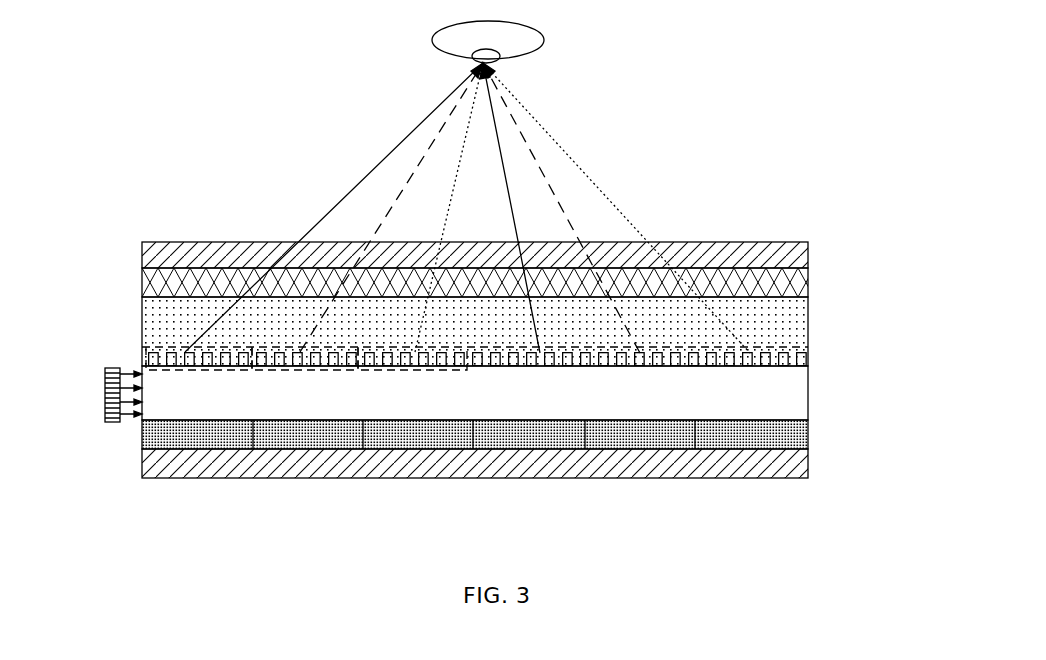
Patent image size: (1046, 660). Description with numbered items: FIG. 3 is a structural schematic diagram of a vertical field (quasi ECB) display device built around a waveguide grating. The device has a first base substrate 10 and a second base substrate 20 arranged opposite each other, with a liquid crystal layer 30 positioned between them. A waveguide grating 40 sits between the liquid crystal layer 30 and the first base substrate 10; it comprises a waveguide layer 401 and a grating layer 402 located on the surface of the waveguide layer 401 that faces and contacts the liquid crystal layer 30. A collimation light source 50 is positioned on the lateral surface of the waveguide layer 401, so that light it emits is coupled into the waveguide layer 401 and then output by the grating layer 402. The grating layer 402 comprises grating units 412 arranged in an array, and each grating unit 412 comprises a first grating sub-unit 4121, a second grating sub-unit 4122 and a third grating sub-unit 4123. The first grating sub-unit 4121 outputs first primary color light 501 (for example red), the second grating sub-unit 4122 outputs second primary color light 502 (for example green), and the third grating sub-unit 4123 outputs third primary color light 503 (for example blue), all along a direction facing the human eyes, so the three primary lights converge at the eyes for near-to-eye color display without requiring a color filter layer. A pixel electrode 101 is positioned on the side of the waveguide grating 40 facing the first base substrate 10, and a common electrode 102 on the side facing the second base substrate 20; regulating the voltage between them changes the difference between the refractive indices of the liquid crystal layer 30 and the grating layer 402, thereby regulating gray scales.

The first base substrate 10 is at (808, 463).
The pixel electrode 101 is at (142, 437).
The common electrode 102 is at (142, 285).
The second base substrate 20 is at (808, 248).
The liquid crystal layer 30 is at (808, 310).
The waveguide grating 40 is at (540, 360).
The waveguide layer 401 is at (808, 398).
The grating layer 402 is at (808, 358).
The grating unit 412 is at (306, 460).
The first grating sub-unit 4121 is at (190, 371).
The second grating sub-unit 4122 is at (307, 371).
The third grating sub-unit 4123 is at (412, 435).
The collimation light source 50 is at (105, 368).
The first primary color light 501 is at (362, 208).
The second primary color light 502 is at (470, 208).
The third primary color light 503 is at (582, 208).